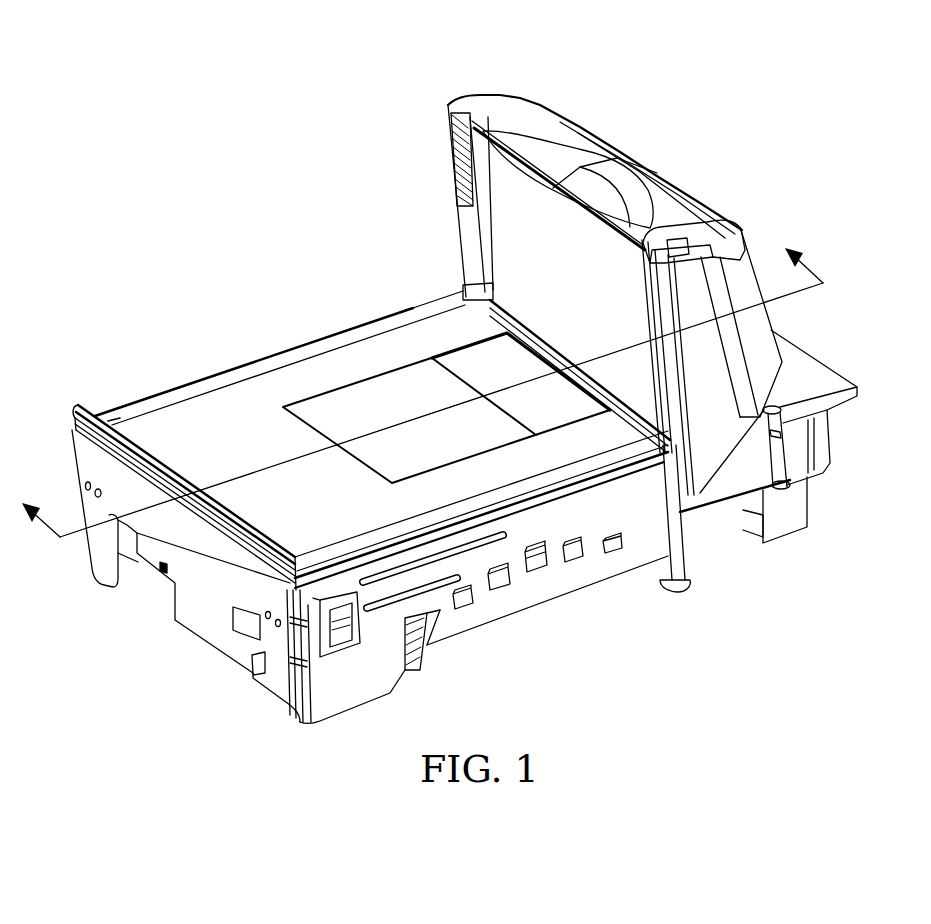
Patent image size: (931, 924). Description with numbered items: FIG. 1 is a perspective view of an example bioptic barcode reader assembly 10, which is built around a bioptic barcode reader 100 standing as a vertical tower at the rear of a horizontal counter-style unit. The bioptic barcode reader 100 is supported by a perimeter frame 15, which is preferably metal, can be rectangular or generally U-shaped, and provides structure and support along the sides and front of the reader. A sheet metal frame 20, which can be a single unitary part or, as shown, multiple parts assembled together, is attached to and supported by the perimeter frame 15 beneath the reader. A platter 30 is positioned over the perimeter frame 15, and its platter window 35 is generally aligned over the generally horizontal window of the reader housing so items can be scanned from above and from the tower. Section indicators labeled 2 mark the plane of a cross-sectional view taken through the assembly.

The bioptic barcode reader assembly 10 is at (148, 66).
The bioptic barcode reader 100 is at (484, 94).
The platter 30 is at (220, 402).
The platter window 35 is at (370, 402).
The sheet metal frame 20 is at (375, 650).
The perimeter frame 15 is at (527, 593).
The section line 2- 2 is at (415, 379).